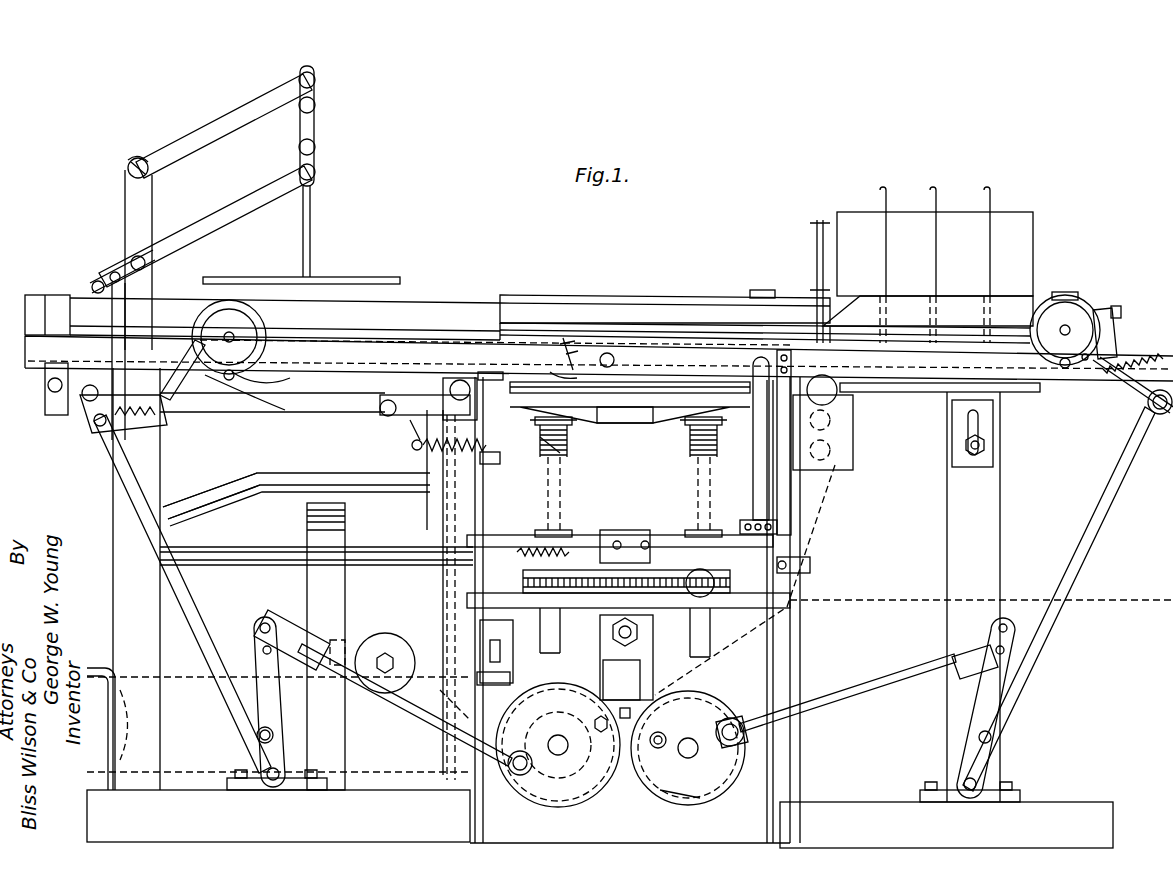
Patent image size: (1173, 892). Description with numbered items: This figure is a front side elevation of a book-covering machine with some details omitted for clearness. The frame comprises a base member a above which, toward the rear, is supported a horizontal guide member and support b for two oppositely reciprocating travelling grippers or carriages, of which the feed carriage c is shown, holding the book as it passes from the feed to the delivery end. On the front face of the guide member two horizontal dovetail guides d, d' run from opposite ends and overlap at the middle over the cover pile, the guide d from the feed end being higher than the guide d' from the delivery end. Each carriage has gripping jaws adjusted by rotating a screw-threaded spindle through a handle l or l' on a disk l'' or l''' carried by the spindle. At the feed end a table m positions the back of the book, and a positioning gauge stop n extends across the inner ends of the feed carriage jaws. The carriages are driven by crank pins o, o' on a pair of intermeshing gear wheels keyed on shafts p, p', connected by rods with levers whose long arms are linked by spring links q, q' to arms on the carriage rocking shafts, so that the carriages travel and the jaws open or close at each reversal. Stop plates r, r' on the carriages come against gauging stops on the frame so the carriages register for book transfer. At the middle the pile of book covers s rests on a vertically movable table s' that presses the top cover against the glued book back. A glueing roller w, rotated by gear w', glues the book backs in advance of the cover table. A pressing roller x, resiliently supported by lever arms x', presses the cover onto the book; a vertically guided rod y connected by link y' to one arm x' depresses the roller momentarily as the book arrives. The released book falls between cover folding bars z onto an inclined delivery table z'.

The base member a is at (600, 819).
The horizontal guide member and support b is at (464, 318).
The travelling gripper or carriage c is at (332, 340).
The dovetail guide d is at (665, 301).
The dovetail guide d' is at (665, 291).
The stop plate r is at (1069, 314).
The stop plate r' is at (248, 406).
The handle l is at (1047, 387).
The handle l' is at (263, 380).
The disk l'' is at (1075, 384).
The disk l''' is at (234, 308).
The spring link q is at (1133, 395).
The spring link q' is at (123, 435).
The positioning gauge stop n is at (817, 258).
The table m is at (925, 390).
The roller w is at (833, 413).
The gear w' is at (769, 580).
The pile of book covers s is at (565, 435).
The vertically movable table s' is at (680, 440).
The roller x is at (428, 394).
The lever arm x' is at (386, 407).
The vertically guided rod y is at (417, 592).
The link y' is at (446, 476).
The cover folding bar z is at (272, 419).
The inclined delivery table z' is at (296, 480).
The crank pin o is at (765, 732).
The crank pin o' is at (512, 793).
The shaft p is at (723, 748).
The shaft p' is at (558, 761).